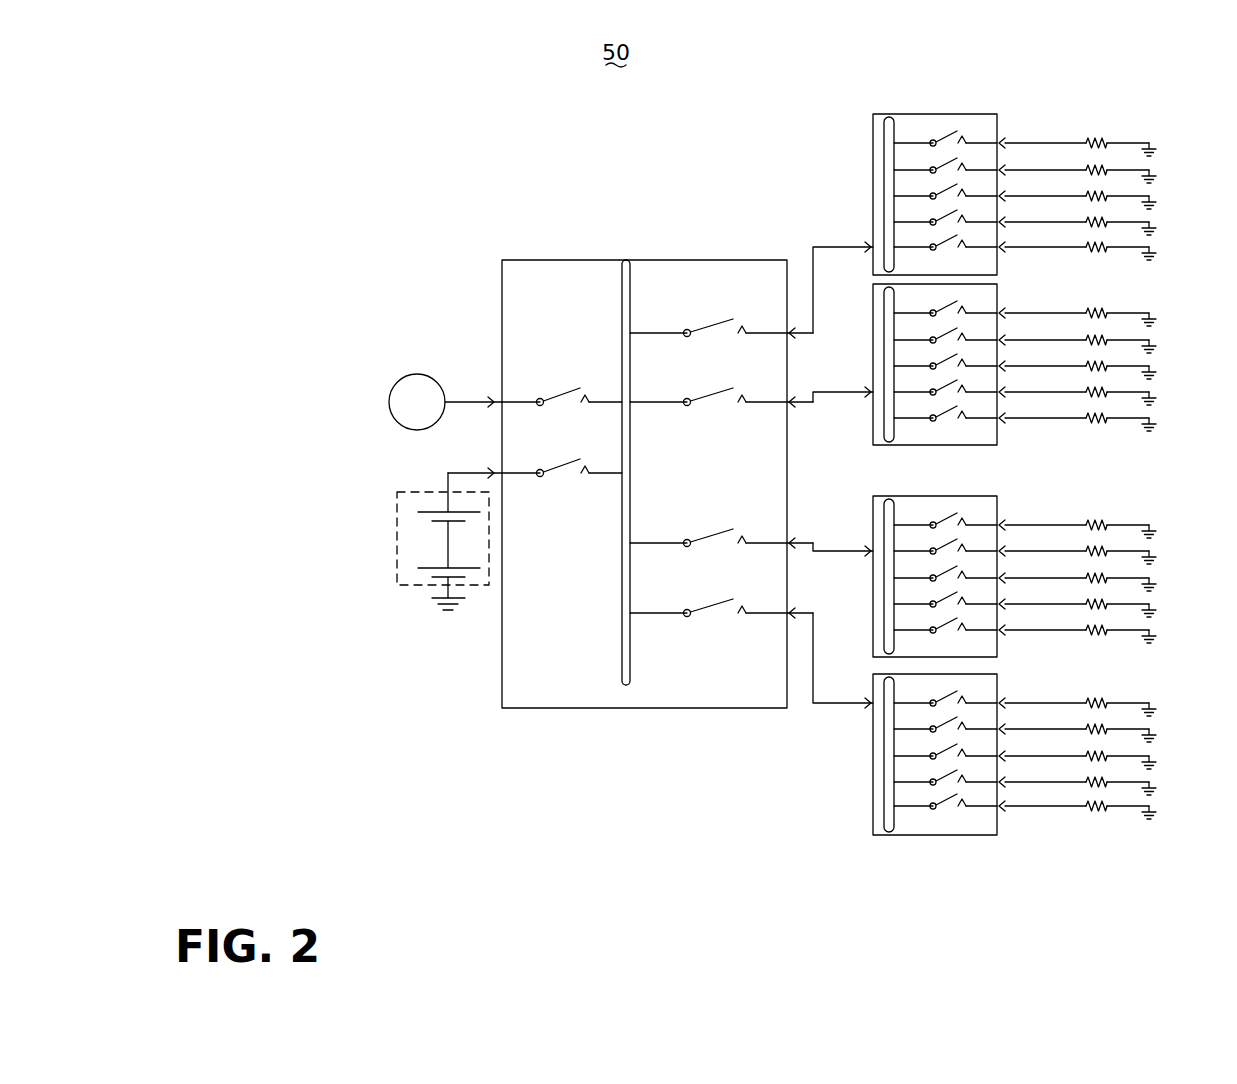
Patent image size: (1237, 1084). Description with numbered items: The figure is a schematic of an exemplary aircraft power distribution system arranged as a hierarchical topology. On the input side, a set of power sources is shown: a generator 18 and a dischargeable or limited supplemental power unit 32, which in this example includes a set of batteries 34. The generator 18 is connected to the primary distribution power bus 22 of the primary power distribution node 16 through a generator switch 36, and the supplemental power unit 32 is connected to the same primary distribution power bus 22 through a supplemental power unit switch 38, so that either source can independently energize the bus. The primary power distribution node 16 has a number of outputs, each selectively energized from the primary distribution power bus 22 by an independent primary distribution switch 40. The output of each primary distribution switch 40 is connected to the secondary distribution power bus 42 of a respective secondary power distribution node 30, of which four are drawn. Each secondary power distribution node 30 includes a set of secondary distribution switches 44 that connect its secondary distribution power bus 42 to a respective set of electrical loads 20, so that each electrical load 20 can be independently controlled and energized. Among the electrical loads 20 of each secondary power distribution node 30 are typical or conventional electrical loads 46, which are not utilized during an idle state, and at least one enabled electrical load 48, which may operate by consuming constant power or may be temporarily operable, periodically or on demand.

The primary power distribution node 16 is at (531, 258).
The generator 18 is at (407, 414).
The electrical load 20 is at (1092, 104).
The primary distribution power bus 22 is at (636, 297).
The secondary power distribution node 30 is at (872, 152).
The supplemental power unit 32 is at (393, 522).
The set of batteries 34 is at (400, 573).
The generator switch 36 is at (566, 378).
The supplemental power unit switch 38 is at (560, 488).
The primary distribution switch 40 is at (709, 381).
The secondary distribution power bus 42 is at (898, 128).
The secondary distribution switch 44 is at (948, 184).
The conventional electrical load 46 is at (1107, 143).
The enabled electrical load 48 is at (1110, 246).